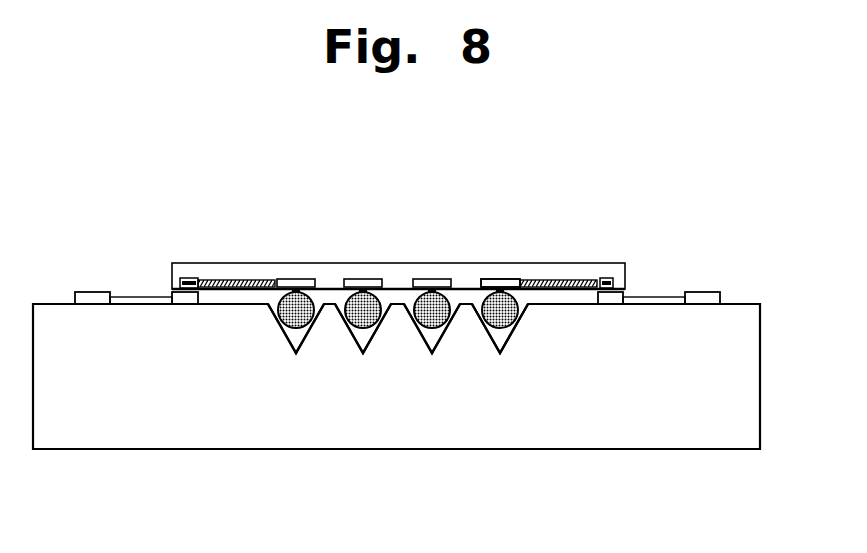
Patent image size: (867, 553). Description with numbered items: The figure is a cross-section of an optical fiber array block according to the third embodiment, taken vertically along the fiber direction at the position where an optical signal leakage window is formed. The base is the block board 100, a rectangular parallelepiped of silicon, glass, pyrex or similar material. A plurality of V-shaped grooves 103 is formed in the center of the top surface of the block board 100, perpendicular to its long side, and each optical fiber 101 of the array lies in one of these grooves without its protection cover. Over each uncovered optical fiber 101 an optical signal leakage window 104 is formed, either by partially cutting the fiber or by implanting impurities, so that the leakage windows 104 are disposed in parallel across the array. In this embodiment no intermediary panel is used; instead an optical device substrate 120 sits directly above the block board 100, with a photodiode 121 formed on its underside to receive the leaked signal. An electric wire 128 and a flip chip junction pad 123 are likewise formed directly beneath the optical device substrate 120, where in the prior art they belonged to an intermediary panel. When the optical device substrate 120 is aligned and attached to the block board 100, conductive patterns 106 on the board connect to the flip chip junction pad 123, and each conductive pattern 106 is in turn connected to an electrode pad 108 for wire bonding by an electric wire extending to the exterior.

The block board 100 is at (660, 436).
The optical fiber 101 is at (432, 327).
The V-shaped groove 103 is at (503, 328).
The optical signal leakage window 104 is at (497, 287).
The conductive pattern 106 is at (605, 302).
The electrode pad 108 is at (699, 302).
The optical device substrate 120 is at (222, 271).
The photodiode 121 is at (433, 281).
The flip chip junction pad 123 is at (607, 282).
The electric wire 128 is at (548, 284).